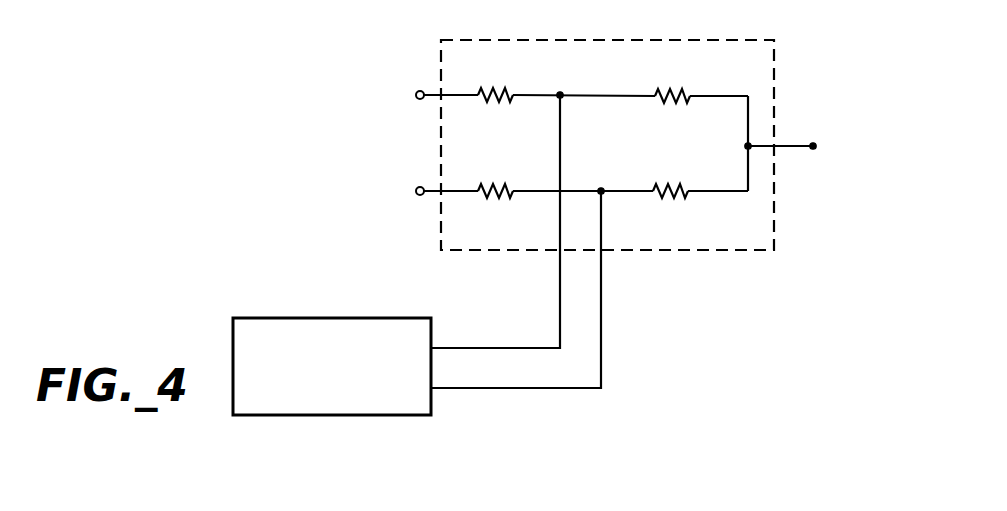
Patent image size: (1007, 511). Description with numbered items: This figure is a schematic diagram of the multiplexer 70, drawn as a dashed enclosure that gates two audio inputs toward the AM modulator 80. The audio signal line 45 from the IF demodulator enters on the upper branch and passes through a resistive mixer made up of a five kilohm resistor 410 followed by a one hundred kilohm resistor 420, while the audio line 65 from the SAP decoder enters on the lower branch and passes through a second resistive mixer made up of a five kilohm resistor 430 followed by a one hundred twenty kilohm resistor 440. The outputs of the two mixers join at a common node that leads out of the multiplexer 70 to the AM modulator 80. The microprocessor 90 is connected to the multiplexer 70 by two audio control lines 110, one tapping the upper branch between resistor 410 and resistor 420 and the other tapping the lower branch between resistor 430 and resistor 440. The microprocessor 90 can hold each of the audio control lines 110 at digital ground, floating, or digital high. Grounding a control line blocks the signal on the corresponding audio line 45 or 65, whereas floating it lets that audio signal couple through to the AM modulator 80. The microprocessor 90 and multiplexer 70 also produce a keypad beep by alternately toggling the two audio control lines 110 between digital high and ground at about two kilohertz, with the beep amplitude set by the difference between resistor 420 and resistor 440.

The audio signal line 45 is at (414, 91).
The audio line from SAP decoder 65 is at (414, 187).
The multiplexer 70 is at (776, 90).
The AM modulator 80 is at (848, 146).
The microprocessor 90 is at (434, 326).
The audio control lines 110 is at (561, 302).
The 5 k resistor 410 is at (480, 90).
The 100 k resistor 420 is at (657, 91).
The 5 k resistor 430 is at (480, 186).
The 120 k resistor 440 is at (655, 186).